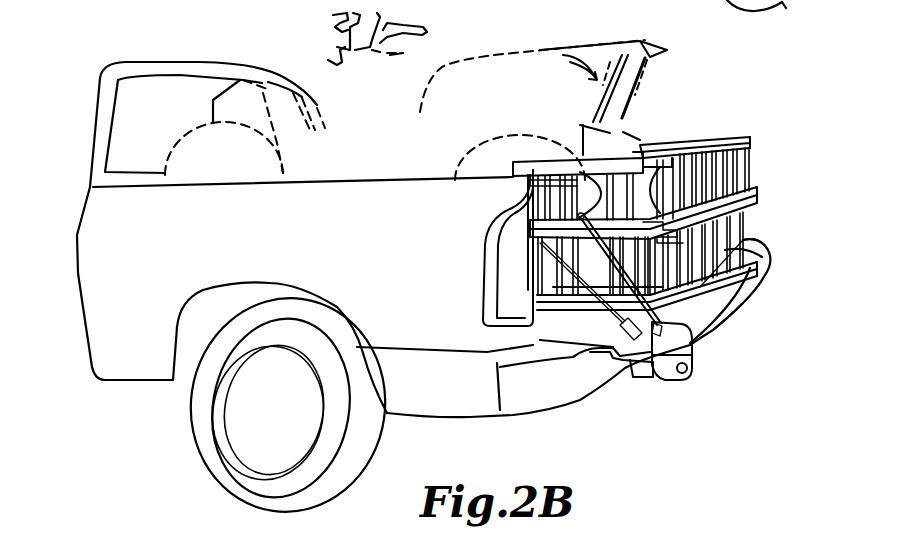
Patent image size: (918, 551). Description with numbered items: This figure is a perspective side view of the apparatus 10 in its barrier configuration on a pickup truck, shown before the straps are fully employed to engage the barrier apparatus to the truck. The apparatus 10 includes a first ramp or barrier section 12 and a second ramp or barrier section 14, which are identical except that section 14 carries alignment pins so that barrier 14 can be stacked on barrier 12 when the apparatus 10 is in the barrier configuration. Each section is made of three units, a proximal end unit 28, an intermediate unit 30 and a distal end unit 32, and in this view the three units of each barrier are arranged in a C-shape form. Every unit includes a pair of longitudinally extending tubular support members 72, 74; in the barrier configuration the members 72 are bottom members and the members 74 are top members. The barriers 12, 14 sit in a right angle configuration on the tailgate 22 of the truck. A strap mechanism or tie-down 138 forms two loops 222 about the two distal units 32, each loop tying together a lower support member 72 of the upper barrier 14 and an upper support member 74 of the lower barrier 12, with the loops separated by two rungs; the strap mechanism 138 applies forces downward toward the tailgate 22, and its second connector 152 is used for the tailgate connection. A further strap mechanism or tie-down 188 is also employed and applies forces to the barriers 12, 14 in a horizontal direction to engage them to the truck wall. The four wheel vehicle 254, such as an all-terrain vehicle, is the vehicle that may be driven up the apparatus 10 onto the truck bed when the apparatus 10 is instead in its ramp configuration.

The apparatus 10 is at (770, 159).
The first ramp or barrier section 12 is at (757, 207).
The second ramp or barrier section 14 is at (703, 140).
The tailgate 22 is at (737, 315).
The proximal end unit 28 is at (668, 142).
The intermediate unit 30 is at (772, 267).
The distal end unit 32 is at (533, 162).
The bottom tubular support member 72 is at (757, 188).
The top tubular support member 74 is at (730, 143).
The strap mechanism or tie-down 138 is at (653, 383).
The second connector 152 is at (697, 350).
The strap mechanism or tie-down 188 is at (553, 155).
The loops 222 is at (547, 197).
The four wheel vehicle 254 is at (313, 80).